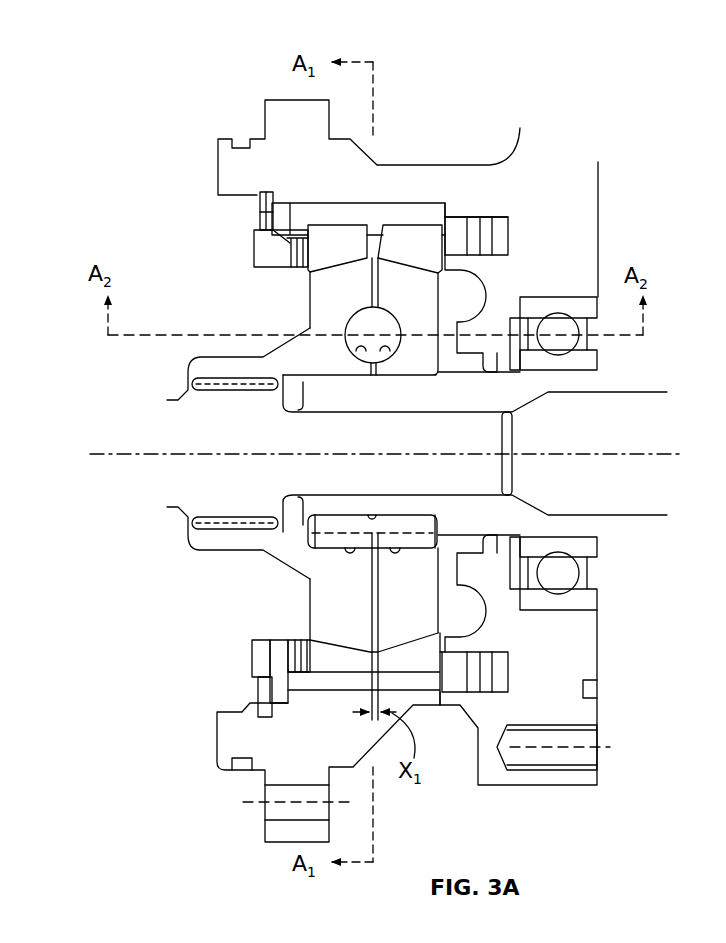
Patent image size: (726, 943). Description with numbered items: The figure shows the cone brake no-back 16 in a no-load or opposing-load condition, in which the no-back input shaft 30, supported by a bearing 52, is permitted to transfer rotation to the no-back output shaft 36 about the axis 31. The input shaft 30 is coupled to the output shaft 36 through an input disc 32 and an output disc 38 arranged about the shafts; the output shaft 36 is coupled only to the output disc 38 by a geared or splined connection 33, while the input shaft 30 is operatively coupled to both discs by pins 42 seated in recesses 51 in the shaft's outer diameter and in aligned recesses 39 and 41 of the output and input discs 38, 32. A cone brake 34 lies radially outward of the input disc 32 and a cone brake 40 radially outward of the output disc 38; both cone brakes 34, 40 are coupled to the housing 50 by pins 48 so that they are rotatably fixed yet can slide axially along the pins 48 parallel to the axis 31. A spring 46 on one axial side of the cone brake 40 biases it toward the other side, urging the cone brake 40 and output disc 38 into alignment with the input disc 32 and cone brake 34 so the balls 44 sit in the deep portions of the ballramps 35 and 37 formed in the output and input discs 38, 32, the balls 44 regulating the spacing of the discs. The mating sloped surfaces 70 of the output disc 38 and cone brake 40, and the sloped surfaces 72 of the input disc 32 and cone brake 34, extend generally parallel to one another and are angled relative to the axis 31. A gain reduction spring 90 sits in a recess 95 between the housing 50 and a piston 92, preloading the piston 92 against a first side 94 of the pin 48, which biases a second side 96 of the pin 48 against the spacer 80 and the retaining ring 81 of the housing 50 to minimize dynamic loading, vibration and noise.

The no-back 16 is at (142, 84).
The no-back input shaft 30 is at (597, 380).
The axis 31 is at (600, 453).
The input disc 32 is at (422, 312).
The geared or splined connection 33 is at (208, 383).
The cone brake 34 is at (447, 258).
The ballramp 35 is at (370, 375).
The no-back output shaft 36 is at (170, 433).
The ballramp 37 is at (378, 375).
The output disc 38 is at (297, 357).
The recess 39 is at (350, 550).
The cone brake 40 is at (263, 222).
The recess 41 is at (395, 550).
The pin 42 is at (413, 527).
The ball 44 is at (368, 327).
The spring 46 is at (280, 647).
The pin 48 is at (427, 215).
The housing 50 is at (282, 125).
The recess 51 is at (372, 513).
The bearing 52 is at (587, 603).
The sloped surface 70 is at (342, 257).
The sloped surface 72 is at (392, 253).
The spacer 80 is at (267, 252).
The retaining ring 81 is at (257, 195).
The gain reduction spring 90 is at (488, 682).
The piston 92 is at (447, 682).
The first side 94 is at (437, 222).
The recess 95 is at (488, 207).
The second side 96 is at (258, 202).